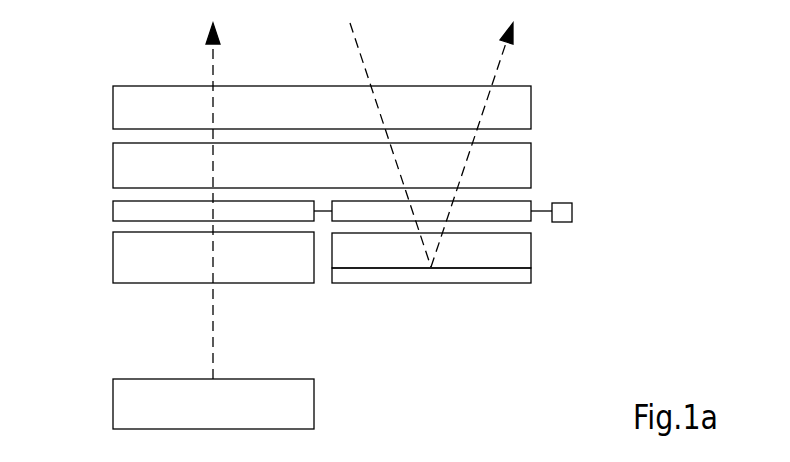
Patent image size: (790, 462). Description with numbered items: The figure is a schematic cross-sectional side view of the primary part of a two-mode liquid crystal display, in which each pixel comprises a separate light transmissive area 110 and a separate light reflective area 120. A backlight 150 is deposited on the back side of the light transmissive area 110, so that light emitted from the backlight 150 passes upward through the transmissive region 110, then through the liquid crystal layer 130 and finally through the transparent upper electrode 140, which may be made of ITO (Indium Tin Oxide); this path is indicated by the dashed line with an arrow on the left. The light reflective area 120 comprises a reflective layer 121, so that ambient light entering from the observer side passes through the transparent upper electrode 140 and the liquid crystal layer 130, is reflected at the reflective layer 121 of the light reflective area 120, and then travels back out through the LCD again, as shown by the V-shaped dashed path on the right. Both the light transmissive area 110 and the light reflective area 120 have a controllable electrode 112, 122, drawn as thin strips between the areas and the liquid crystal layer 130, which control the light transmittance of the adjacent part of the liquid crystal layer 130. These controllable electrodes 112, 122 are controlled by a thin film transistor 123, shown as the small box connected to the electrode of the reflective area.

The light transmissive area 110 is at (113, 255).
The controllable electrode 112 is at (113, 210).
The light reflective area 120 is at (531, 248).
The reflective layer 121 is at (531, 275).
The controllable electrode 122 is at (522, 200).
The thin film transistor 123 is at (572, 211).
The liquid crystal layer 130 is at (531, 152).
The transparent upper electrode 140 is at (531, 93).
The backlight 150 is at (113, 405).